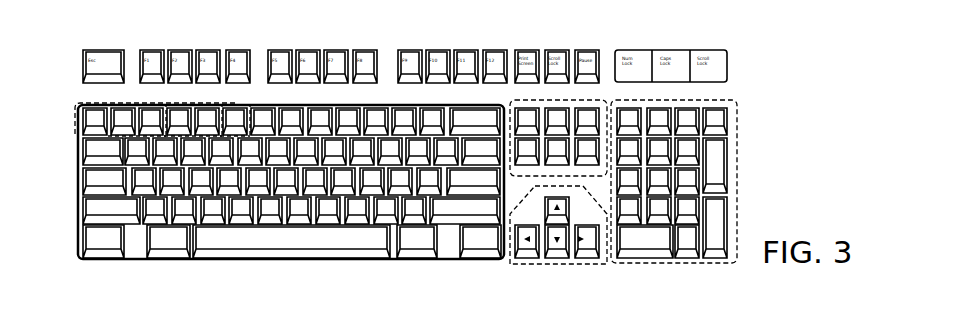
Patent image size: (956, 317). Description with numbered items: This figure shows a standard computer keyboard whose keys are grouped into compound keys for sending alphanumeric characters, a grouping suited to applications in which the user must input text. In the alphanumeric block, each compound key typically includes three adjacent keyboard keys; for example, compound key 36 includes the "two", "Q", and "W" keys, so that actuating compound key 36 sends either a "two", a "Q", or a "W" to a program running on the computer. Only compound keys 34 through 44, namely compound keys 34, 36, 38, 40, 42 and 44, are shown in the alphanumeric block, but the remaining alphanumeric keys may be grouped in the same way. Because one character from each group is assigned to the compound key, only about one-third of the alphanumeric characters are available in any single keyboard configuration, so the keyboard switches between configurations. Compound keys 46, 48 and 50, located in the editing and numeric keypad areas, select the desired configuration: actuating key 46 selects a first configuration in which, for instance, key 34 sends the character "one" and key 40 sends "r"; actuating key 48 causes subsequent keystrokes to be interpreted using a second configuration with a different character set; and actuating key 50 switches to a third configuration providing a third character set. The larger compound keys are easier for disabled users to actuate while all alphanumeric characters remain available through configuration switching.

The compound key 34 is at (76, 128).
The compound key 36 is at (148, 104).
The compound key 38 is at (190, 104).
The compound key 40 is at (238, 104).
The compound key 42 is at (139, 194).
The compound key 44 is at (212, 222).
The compound key 46 is at (737, 158).
The compound key 48 is at (563, 263).
The compound key 50 is at (563, 100).